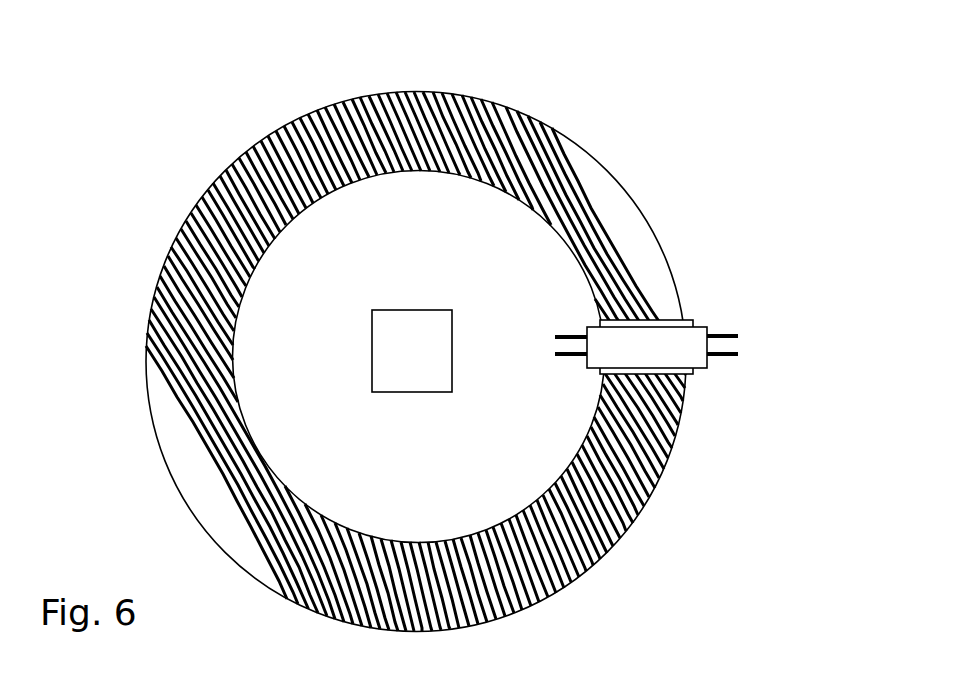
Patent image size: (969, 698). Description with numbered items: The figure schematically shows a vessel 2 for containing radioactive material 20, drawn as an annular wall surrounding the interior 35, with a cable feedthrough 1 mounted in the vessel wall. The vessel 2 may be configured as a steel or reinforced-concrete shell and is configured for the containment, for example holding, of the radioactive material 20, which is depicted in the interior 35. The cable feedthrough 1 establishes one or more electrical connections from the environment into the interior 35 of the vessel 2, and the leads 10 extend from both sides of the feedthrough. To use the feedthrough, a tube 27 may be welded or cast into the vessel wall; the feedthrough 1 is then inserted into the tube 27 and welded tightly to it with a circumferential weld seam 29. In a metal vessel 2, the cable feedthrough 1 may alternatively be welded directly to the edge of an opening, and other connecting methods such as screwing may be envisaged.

The cable feedthrough 1 is at (707, 368).
The vessel 2 is at (598, 162).
The connection wires 10 is at (718, 333).
The radioactive material 20 is at (372, 333).
The tube 27 is at (685, 400).
The circumferential weld seam 29 is at (692, 318).
The interior 35 is at (442, 233).